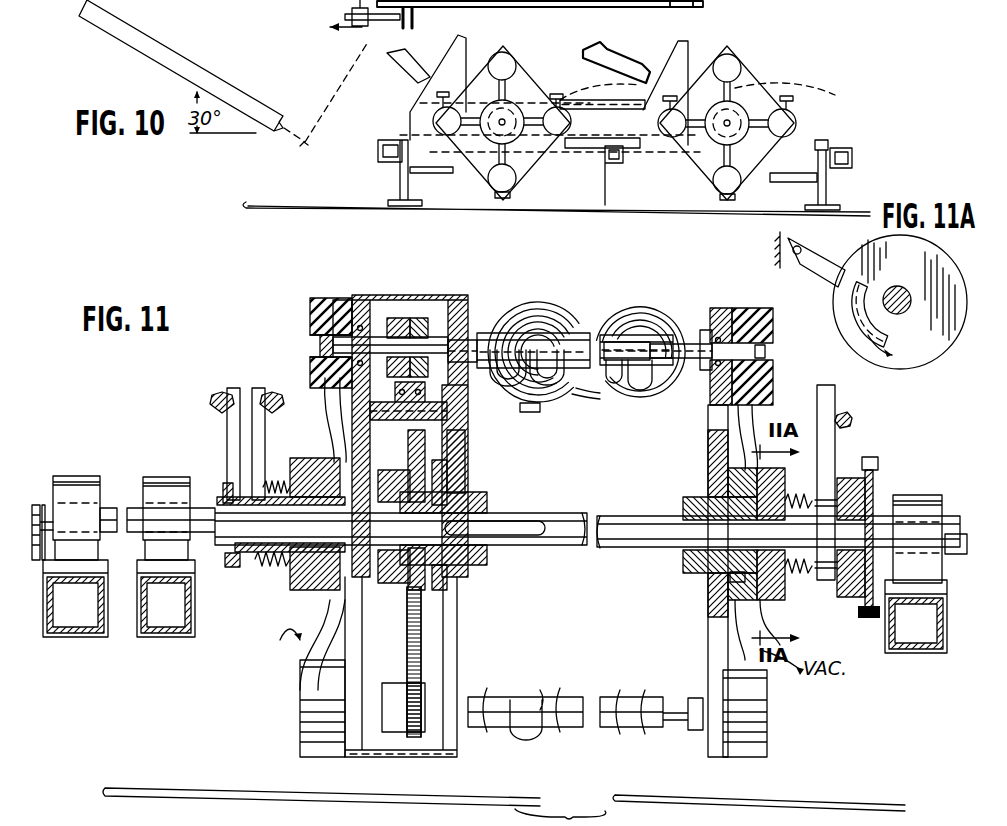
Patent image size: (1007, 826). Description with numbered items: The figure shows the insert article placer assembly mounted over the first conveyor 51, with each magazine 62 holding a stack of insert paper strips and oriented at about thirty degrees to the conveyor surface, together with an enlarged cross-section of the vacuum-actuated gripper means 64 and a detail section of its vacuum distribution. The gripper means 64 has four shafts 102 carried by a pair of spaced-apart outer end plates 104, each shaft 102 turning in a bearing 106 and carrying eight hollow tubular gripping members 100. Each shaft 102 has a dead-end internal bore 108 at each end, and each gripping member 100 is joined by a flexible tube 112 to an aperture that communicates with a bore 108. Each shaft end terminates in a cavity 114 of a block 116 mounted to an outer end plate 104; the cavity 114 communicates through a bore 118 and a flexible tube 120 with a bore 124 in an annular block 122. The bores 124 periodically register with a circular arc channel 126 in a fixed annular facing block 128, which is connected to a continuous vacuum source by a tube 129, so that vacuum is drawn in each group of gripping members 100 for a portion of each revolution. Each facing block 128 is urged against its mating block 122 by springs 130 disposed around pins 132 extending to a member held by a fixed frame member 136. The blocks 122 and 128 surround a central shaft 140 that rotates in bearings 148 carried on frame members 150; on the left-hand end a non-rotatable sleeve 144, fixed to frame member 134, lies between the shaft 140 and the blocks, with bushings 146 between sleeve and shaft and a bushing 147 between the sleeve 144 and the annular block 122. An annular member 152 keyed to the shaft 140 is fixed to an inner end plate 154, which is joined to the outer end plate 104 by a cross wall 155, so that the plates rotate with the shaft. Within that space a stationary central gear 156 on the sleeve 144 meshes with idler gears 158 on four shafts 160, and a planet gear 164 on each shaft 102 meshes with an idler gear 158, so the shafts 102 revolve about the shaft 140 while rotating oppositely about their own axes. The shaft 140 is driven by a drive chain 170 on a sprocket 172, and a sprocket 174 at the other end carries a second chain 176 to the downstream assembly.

In FIG. 10, the first conveyor 51 is at (283, 203).
In FIG. 11, the first conveyor 51 is at (785, 797).
In FIG. 10, the magazine 62 is at (218, 52).
In FIG. 10, the vacuum-actuated gripper means 64 is at (522, 57).
In FIG. 10, the gripping member 100 is at (535, 82).
In FIG. 11, the gripping member 100 is at (588, 398).
In FIG. 11, the shaft 102 is at (660, 335).
In FIG. 10, the outer end plate 104 is at (522, 170).
In FIG. 11, the outer end plate 104 is at (368, 296).
In FIG. 11, the bearing 106 is at (336, 296).
In FIG. 11, the internal bore 108 is at (484, 340).
In FIG. 11, the flexible tube 112 is at (538, 332).
In FIG. 11, the cavity 114 is at (316, 320).
In FIG. 10, the block 116 is at (517, 36).
In FIG. 11, the block 116 is at (313, 296).
In FIG. 11, the bore 118 is at (318, 345).
In FIG. 11, the flexible tube 120 is at (328, 400).
In FIG. 11, the annular block 122 is at (230, 420).
In FIG. 11, the bore 124 is at (245, 497).
In FIG. 11, the circular arc channel 126 is at (300, 578).
In FIG. 11A, the circular arc channel 126 is at (868, 340).
In FIG. 11, the facing block 128 is at (305, 458).
In FIG. 11A, the facing block 128 is at (920, 368).
In FIG. 11, the tube 129 is at (280, 642).
In FIG. 11A, the tube 129 is at (896, 362).
In FIG. 11, the spring 130 is at (295, 480).
In FIG. 11, the pin 132 is at (262, 487).
In FIG. 11, the frame member 134 is at (224, 395).
In FIG. 11, the fixed frame member 136 is at (268, 395).
In FIG. 11, the central shaft 140 is at (572, 513).
In FIG. 11, the sleeve 144 is at (412, 492).
In FIG. 11, the bushing 146 is at (470, 566).
In FIG. 11, the bushing 147 is at (448, 485).
In FIG. 11, the bearing 148 is at (80, 476).
In FIG. 10, the frame member 150 is at (378, 150).
In FIG. 11, the frame member 150 is at (145, 640).
In FIG. 11, the annular member 152 is at (488, 553).
In FIG. 11, the inner end plate 154 is at (465, 460).
In FIG. 11, the cross wall 155 is at (358, 296).
In FIG. 11, the stationary central gear 156 is at (466, 472).
In FIG. 11, the idler gear 158 is at (466, 456).
In FIG. 11, the shaft 160 is at (447, 406).
In FIG. 11, the planet gear 164 is at (420, 318).
In FIG. 10, the drive chain 170 is at (308, 14).
In FIG. 11, the drive chain 170 is at (36, 505).
In FIG. 11, the sprocket 172 is at (44, 505).
In FIG. 11, the sprocket 174 is at (878, 478).
In FIG. 11, the second chain 176 is at (868, 620).